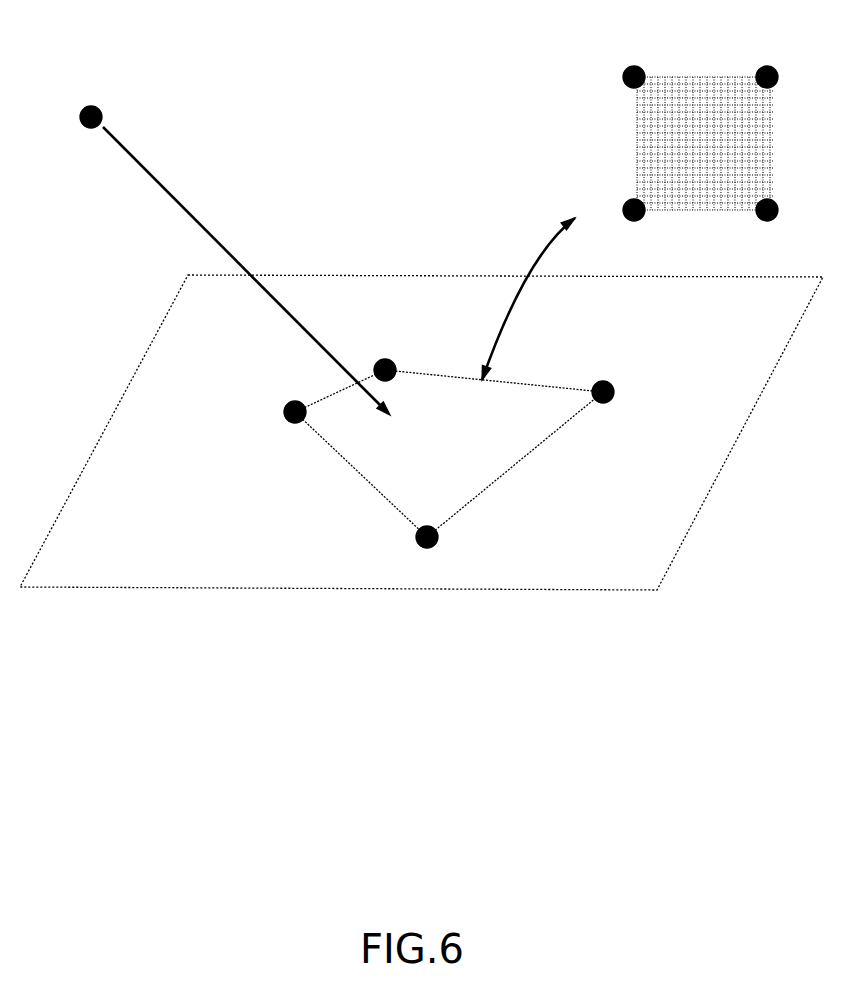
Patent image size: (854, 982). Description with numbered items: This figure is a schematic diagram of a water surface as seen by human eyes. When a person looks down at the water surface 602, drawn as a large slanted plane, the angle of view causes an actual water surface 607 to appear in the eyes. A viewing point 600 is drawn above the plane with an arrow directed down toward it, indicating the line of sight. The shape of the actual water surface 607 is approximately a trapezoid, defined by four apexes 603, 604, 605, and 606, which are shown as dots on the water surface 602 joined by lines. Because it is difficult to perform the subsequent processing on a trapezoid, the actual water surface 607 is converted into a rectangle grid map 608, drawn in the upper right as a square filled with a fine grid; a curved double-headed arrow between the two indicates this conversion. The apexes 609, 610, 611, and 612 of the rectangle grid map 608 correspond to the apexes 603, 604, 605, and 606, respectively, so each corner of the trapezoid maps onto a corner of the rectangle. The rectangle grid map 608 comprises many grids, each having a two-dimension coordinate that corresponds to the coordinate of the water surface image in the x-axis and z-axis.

The light source / projector 600 is at (88, 106).
The water surface 602 is at (643, 533).
The apex 603 is at (616, 382).
The apex 604 is at (427, 550).
The apex 605 is at (283, 417).
The apex 606 is at (388, 358).
The actual water surface 607 is at (373, 433).
The rectangle grid map 608 is at (656, 76).
The apex 609 is at (770, 66).
The apex 610 is at (770, 222).
The apex 611 is at (622, 216).
The apex 612 is at (624, 68).